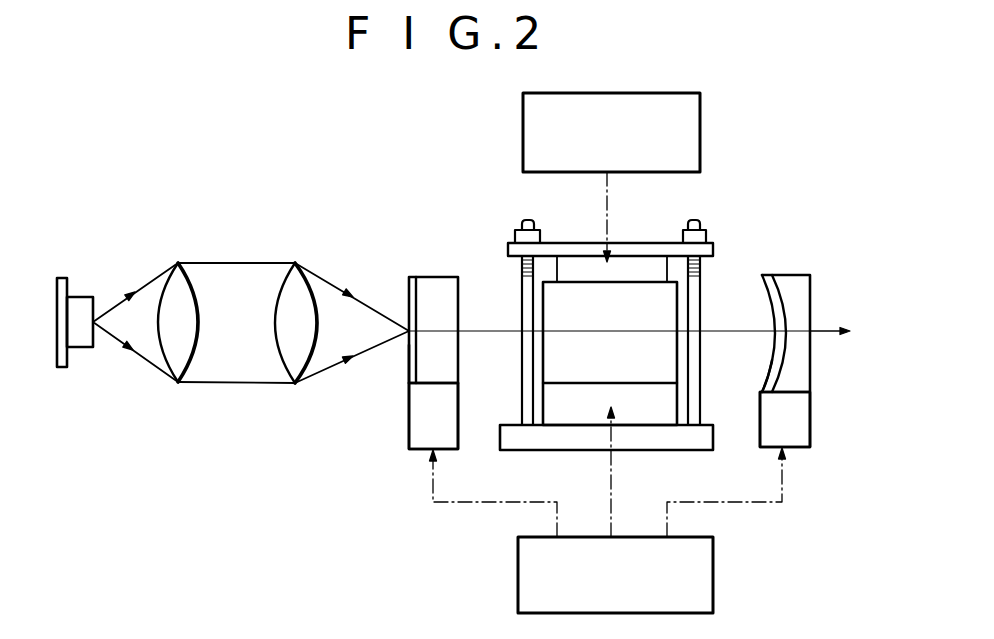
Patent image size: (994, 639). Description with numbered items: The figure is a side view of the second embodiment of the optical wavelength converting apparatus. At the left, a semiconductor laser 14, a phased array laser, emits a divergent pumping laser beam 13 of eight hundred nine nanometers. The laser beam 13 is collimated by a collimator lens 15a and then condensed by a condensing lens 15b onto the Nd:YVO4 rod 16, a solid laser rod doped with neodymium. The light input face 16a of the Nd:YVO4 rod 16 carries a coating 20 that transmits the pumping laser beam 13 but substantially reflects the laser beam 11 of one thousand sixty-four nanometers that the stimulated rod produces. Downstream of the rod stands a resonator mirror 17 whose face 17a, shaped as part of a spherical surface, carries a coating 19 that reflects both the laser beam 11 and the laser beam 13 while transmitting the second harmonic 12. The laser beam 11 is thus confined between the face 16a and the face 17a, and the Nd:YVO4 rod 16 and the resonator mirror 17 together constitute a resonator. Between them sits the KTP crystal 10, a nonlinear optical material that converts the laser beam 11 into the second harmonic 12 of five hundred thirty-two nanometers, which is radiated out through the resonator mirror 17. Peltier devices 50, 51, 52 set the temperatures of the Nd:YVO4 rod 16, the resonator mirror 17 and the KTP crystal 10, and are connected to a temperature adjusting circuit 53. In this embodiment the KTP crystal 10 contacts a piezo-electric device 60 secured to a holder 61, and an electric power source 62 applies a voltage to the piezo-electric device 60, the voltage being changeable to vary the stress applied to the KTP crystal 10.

The KTP crystal 10 is at (575, 286).
The laser beam 11 is at (727, 333).
The second harmonic 12 is at (828, 328).
The laser beam 13 is at (145, 284).
The semiconductor laser 14 is at (80, 295).
The collimator lens 15a is at (167, 280).
The condensing lens 15b is at (280, 283).
The Nd:YVO4 rod 16 is at (402, 337).
The light input face 16a is at (407, 292).
The resonator mirror 17 is at (761, 346).
The face of the resonator mirror 17a is at (762, 287).
The coating 19 is at (762, 377).
The coating 20 is at (407, 357).
The Peltier device 50 is at (423, 427).
The Peltier device 51 is at (772, 433).
The Peltier device 52 is at (578, 413).
The temperature adjusting circuit 53 is at (637, 592).
The piezo-electric device 60 is at (638, 263).
The holder 61 is at (508, 250).
The electric power source 62 is at (637, 148).